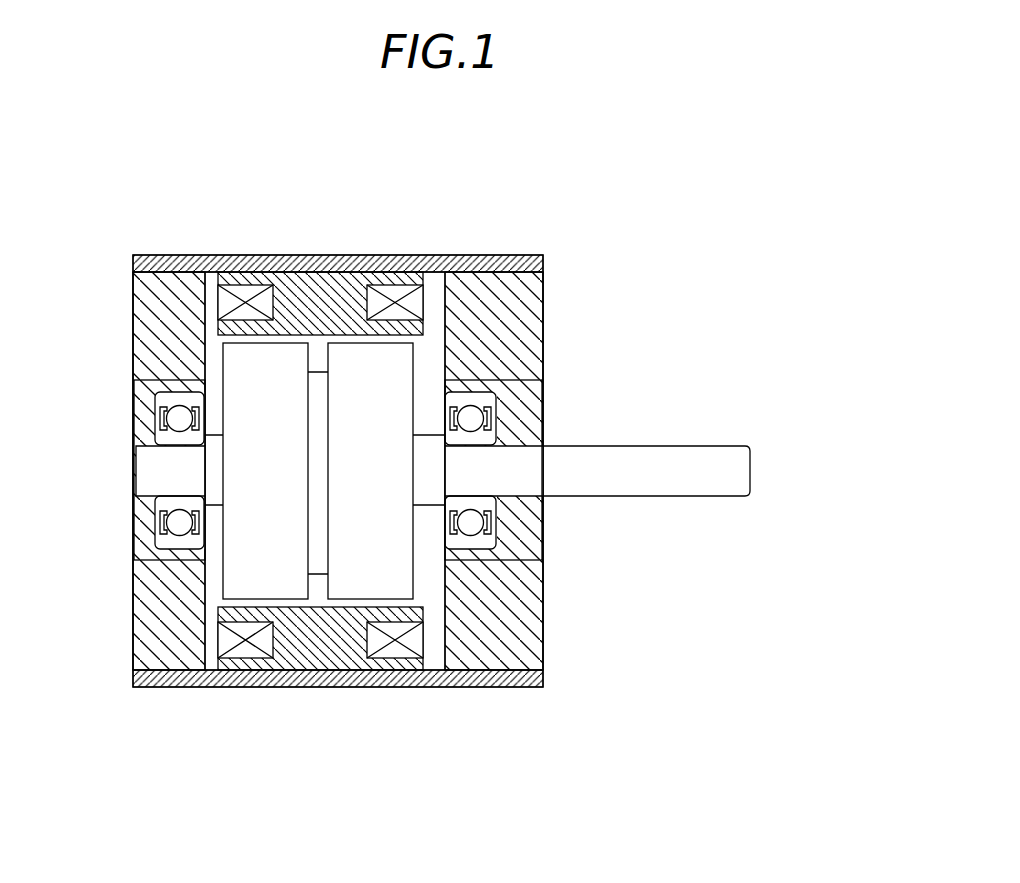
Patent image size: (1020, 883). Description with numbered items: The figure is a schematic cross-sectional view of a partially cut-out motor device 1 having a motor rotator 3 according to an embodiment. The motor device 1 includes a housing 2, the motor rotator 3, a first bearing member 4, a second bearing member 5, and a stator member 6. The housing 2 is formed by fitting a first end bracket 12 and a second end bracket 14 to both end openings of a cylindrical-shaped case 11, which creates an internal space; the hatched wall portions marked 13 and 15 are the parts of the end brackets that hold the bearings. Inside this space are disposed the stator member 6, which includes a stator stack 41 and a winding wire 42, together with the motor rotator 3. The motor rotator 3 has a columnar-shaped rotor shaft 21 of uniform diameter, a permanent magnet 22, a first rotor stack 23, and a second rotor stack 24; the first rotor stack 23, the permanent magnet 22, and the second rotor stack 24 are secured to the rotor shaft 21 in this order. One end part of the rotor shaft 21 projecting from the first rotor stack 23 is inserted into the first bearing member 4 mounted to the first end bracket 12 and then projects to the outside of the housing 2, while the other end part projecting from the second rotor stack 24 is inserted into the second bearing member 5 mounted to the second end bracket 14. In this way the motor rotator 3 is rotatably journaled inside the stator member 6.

The motor device 1 is at (622, 164).
The housing 2 is at (341, 412).
The cylindrical-shaped case 11 is at (304, 256).
The first end bracket 12 is at (465, 290).
The right bearing holder 13 is at (498, 390).
The second end bracket 14 is at (182, 288).
The left bearing holder 15 is at (165, 383).
The motor rotator 3 is at (485, 468).
The rotor shaft 21 is at (639, 478).
The permanent magnet 22 is at (338, 484).
The first rotor stack 23 is at (380, 565).
The second rotor stack 24 is at (243, 582).
The first bearing member 4 is at (475, 420).
The second bearing member 5 is at (175, 421).
The stator member 6 is at (320, 560).
The stator stack 41 is at (292, 648).
The winding wire 42 is at (375, 648).